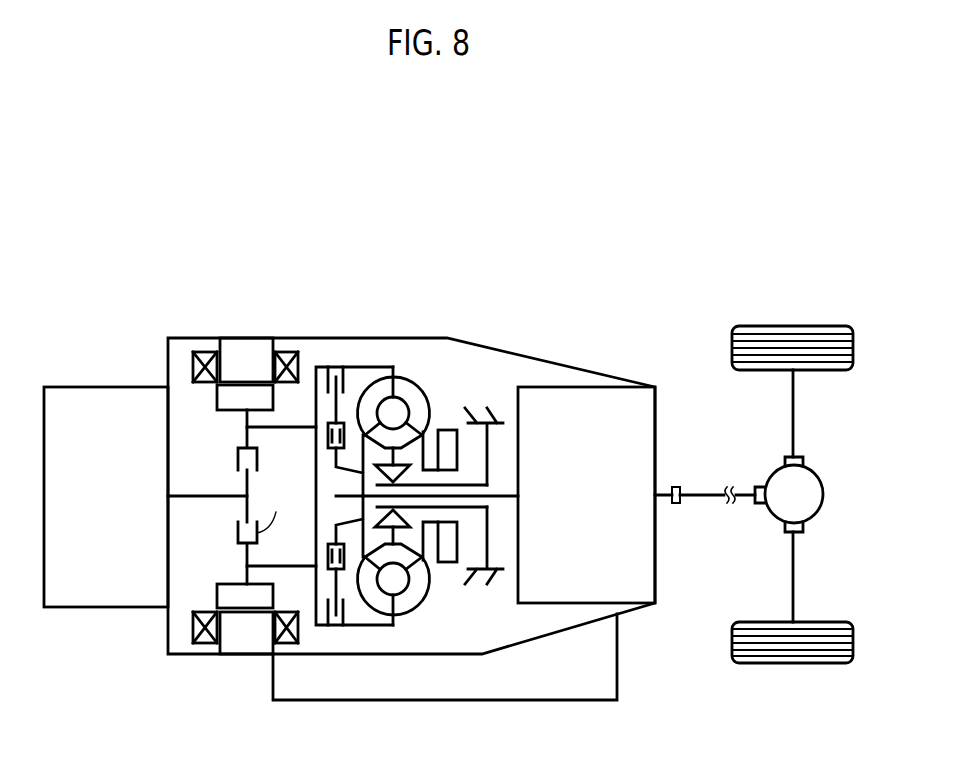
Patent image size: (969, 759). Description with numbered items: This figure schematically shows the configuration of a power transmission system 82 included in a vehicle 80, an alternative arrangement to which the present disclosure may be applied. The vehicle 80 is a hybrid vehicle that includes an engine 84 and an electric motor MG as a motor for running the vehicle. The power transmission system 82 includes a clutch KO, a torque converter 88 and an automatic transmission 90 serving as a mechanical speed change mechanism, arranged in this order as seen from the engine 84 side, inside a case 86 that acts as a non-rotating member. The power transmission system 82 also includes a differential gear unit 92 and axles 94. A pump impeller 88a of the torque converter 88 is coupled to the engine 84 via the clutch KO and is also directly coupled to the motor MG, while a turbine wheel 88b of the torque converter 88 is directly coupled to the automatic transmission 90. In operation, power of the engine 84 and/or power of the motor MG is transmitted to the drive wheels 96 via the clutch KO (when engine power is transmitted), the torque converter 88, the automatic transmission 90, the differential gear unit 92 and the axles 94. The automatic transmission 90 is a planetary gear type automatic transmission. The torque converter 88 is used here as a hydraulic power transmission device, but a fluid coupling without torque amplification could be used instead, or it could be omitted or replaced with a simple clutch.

The vehicle 80 is at (592, 236).
The power transmission system 82 is at (398, 283).
The engine 84 is at (70, 392).
The case 86 is at (423, 337).
The torque converter 88 is at (433, 370).
The pump impeller 88a is at (413, 595).
The turbine wheel 88b is at (372, 595).
The automatic transmission 90 is at (640, 440).
The differential gear unit 92 is at (808, 477).
The axles 94 is at (792, 415).
The drive wheels 96 is at (740, 347).